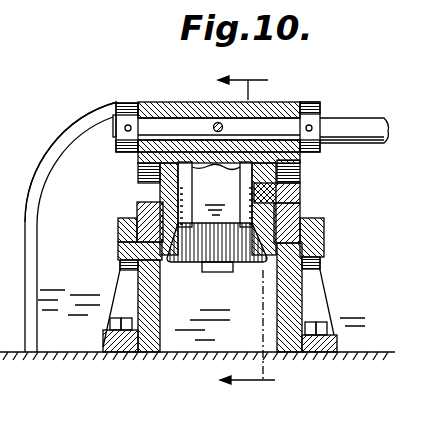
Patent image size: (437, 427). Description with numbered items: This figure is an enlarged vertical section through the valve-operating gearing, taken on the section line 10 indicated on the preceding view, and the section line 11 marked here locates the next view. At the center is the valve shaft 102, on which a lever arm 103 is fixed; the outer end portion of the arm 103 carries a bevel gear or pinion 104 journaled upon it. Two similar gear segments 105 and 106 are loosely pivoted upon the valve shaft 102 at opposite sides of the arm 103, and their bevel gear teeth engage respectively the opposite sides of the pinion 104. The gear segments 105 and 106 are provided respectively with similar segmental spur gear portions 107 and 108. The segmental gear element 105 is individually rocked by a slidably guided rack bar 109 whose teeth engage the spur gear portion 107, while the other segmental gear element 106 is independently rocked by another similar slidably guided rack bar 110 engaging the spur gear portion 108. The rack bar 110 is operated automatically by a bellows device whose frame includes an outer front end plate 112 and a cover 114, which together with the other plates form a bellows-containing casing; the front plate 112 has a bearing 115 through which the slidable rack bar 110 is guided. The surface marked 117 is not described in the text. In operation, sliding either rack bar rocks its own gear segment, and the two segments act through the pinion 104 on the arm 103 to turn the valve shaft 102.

The valve shaft 102 is at (352, 128).
The lever arm 103 is at (218, 208).
The bevel gear or pinion 104 is at (190, 265).
The gear segment 105 is at (284, 172).
The gear segment 106 is at (157, 173).
The segmental spur gear portion 107 is at (289, 193).
The segmental spur gear portion 108 is at (140, 200).
The rack bar 109 is at (320, 230).
The rack bar 110 is at (118, 237).
The outer front end plate 112 is at (97, 141).
The cover 114 is at (58, 147).
The bearing 115 is at (142, 232).
The base surface 117 is at (221, 318).
The section line 11- 11 is at (246, 232).
The figure reference 10 is at (426, 414).